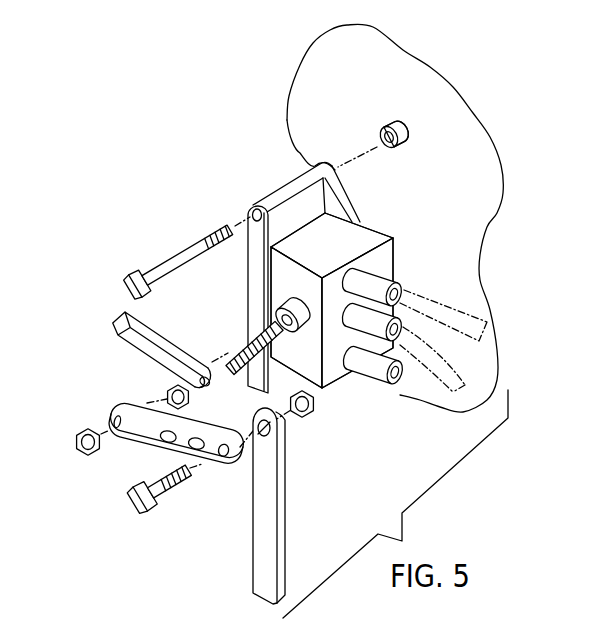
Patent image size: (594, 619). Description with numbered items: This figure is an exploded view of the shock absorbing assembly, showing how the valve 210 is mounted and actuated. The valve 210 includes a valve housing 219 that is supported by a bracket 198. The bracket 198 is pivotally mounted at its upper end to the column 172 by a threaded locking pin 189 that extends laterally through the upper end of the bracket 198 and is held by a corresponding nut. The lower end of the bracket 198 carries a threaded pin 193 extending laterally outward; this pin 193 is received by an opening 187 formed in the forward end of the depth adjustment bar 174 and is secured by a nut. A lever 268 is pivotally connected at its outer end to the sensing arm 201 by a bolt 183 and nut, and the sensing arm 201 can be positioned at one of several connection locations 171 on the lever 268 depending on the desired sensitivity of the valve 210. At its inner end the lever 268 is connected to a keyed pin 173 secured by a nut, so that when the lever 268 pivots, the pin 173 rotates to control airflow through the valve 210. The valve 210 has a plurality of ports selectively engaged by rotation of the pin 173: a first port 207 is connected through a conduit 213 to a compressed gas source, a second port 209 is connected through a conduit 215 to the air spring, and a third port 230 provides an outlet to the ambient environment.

The column 172 is at (351, 132).
The bracket 198 is at (273, 183).
The threaded locking pin 189 is at (163, 265).
The valve 210 is at (353, 226).
The valve housing 219 is at (390, 236).
The first port 207 is at (385, 270).
The conduit 213 is at (440, 302).
The second port 209 is at (382, 323).
The conduit 215 is at (447, 360).
The third port 230 is at (373, 380).
The keyed pin 173 is at (262, 324).
The opening 187 is at (198, 377).
The depth adjustment bar 174 is at (118, 342).
The threaded pin 193 is at (253, 357).
The connection locations 171 is at (199, 427).
The lever 268 is at (131, 445).
The bolt 183 is at (182, 503).
The sensing arm 201 is at (288, 498).